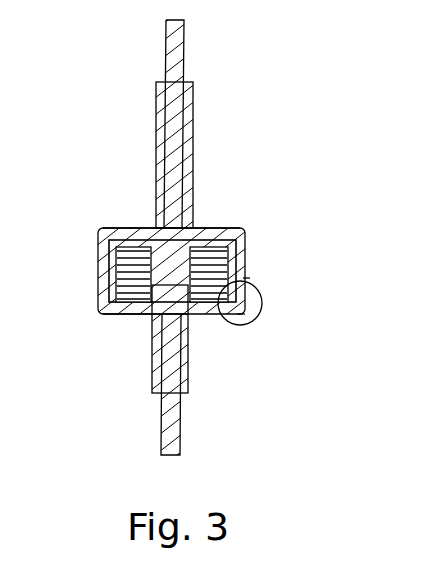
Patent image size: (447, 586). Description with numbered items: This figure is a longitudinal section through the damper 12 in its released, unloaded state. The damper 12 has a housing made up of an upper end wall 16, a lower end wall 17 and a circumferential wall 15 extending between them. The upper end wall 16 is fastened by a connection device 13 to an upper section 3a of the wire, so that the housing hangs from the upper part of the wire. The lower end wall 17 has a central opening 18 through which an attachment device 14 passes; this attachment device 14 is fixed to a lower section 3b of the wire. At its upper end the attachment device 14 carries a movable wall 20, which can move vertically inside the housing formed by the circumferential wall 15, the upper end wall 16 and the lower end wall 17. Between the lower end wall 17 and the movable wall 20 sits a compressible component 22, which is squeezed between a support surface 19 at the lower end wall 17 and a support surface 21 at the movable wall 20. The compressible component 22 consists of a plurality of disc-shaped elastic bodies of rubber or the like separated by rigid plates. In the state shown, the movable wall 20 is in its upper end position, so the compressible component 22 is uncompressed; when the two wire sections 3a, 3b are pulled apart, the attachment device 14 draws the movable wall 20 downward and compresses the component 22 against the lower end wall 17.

The upper section of the wire 3a is at (178, 47).
The lower section of the wire 3b is at (168, 424).
The damper 12 is at (320, 158).
The connection device 13 is at (193, 198).
The attachment device 14 is at (184, 360).
The circumferential wall 15 is at (245, 252).
The upper end wall 16 is at (232, 230).
The lower end wall 17 is at (206, 325).
The central opening 18 is at (148, 318).
The support surface 19 is at (108, 313).
The movable wall 20 is at (140, 248).
The support surface 21 is at (100, 258).
The compressible component 22 is at (250, 278).